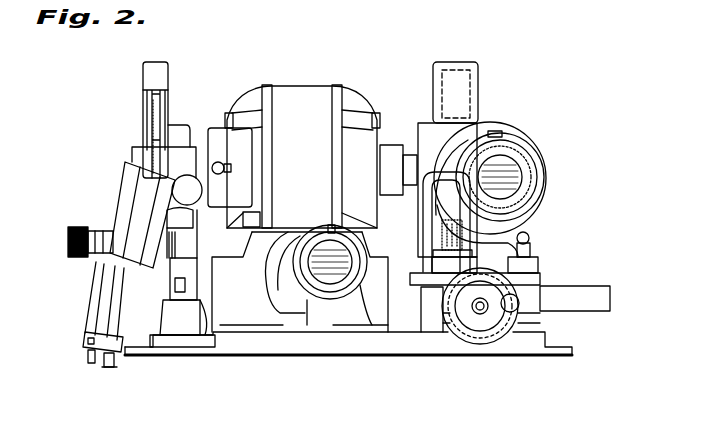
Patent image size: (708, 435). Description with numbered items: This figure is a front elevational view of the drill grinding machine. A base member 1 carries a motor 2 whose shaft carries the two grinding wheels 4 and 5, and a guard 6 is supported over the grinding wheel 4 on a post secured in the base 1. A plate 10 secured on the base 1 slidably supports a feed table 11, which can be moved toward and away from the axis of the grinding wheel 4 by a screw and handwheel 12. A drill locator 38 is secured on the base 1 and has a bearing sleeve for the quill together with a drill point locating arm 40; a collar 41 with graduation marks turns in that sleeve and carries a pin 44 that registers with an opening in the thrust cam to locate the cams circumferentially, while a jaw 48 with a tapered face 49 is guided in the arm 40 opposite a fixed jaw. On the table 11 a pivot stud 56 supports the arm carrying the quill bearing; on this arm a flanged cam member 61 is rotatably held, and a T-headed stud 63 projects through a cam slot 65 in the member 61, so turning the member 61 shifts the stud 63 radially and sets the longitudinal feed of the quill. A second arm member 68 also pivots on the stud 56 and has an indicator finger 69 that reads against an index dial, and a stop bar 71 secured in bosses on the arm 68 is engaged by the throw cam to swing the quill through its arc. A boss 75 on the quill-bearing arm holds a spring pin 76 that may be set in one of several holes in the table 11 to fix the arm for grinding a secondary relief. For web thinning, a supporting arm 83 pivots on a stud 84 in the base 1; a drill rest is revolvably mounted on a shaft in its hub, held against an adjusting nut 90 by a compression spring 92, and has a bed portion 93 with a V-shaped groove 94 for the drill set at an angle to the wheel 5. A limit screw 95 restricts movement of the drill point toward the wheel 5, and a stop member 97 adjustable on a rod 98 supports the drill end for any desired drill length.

The base member 1 is at (200, 333).
The motor 2 is at (321, 156).
The grinding wheel 4 is at (433, 125).
The grinding wheel 5 is at (143, 100).
The guard 6 is at (465, 64).
The plate 10 is at (533, 320).
The feed table 11 is at (593, 293).
The screw and handwheel 12 is at (485, 343).
The drill locator 38 is at (317, 315).
The drill point locating arm 40 is at (256, 313).
The collar 41 is at (337, 288).
The pin or stud 44 is at (333, 227).
The jaw 48 is at (268, 276).
The tapered face 49 is at (272, 227).
The pivot stud 56 is at (443, 237).
The cam member 61 is at (548, 163).
The stud 63 is at (497, 132).
The cam slot 65 is at (535, 158).
The second arm member 68 is at (432, 292).
The indicator finger 69 is at (542, 283).
The stop bar 71 is at (420, 243).
The boss 75 is at (540, 262).
The spring pin 76 is at (530, 243).
The supporting arm 83 is at (207, 347).
The stud 84 is at (170, 296).
The adjusting nut 90 is at (68, 240).
The compression spring 92 is at (178, 270).
The bed portion 93 is at (132, 170).
The V-shaped groove 94 is at (142, 198).
The limit screw 95 is at (190, 183).
The stop member 97 is at (110, 360).
The rod 98 is at (104, 292).